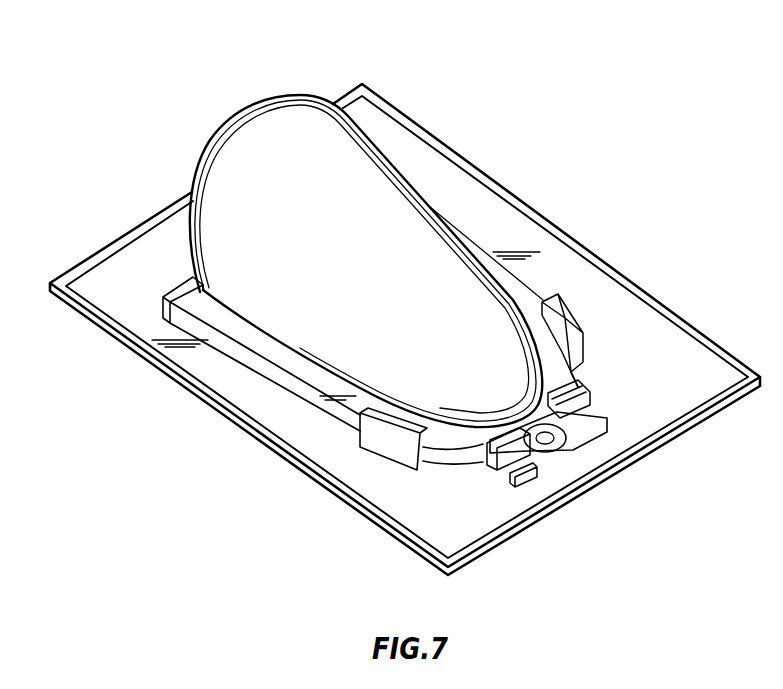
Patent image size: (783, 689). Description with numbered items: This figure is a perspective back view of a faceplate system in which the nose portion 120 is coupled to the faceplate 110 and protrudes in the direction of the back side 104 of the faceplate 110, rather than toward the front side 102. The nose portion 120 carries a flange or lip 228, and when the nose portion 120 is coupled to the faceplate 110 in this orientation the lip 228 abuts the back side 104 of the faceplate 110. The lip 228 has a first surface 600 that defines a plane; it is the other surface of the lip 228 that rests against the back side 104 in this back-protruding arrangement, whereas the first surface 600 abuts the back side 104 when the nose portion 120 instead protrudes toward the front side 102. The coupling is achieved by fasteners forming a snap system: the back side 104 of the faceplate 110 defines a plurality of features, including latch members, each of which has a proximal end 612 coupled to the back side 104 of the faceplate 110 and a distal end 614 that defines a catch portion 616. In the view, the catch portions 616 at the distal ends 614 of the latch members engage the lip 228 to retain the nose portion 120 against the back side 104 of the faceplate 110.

The front side 102 is at (547, 534).
The back side 104 is at (657, 368).
The faceplate 110 is at (652, 458).
The nose portion 120 is at (360, 262).
The lip 228 is at (288, 372).
The first surface 600 is at (267, 353).
The proximal end 612 is at (420, 470).
The distal end 614 is at (558, 312).
The catch portion 616 is at (561, 331).